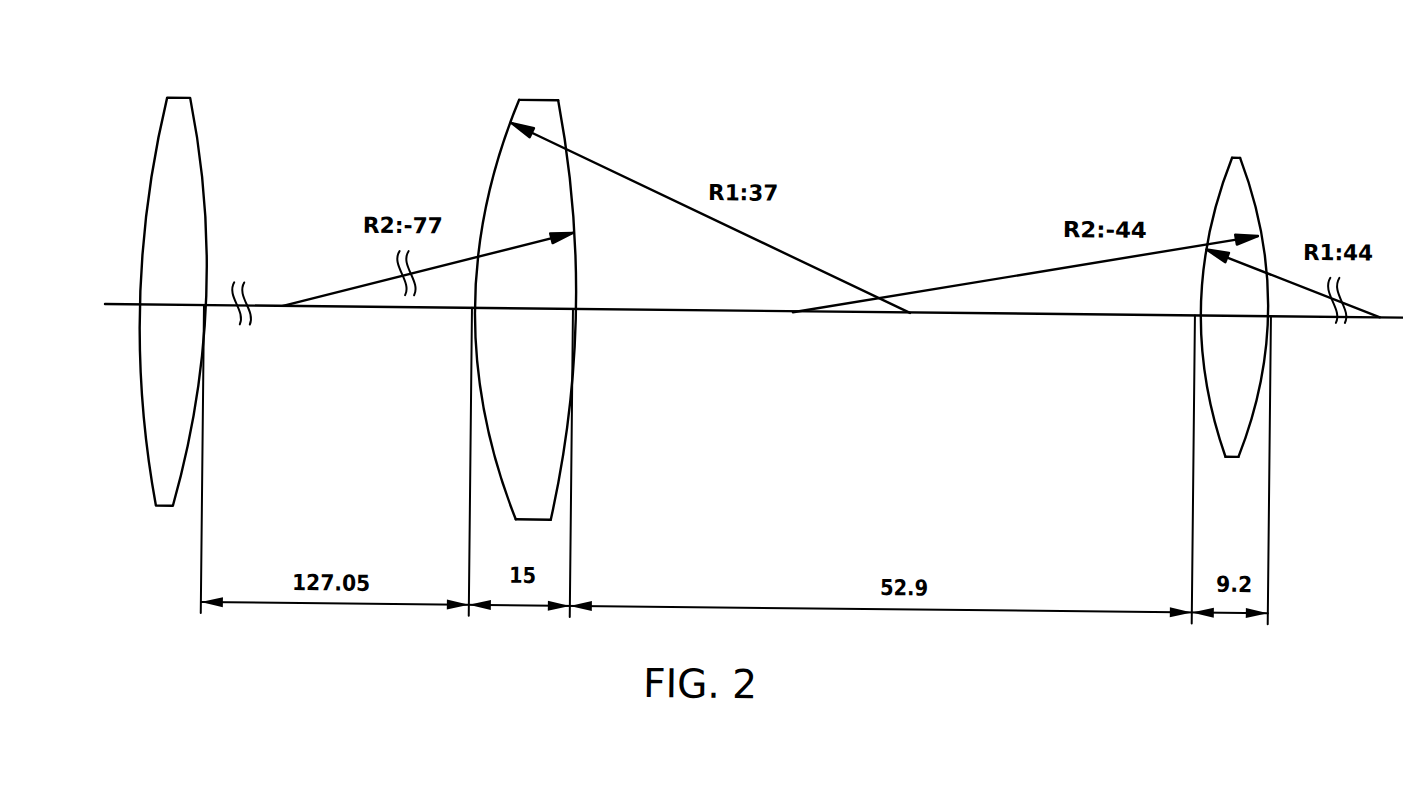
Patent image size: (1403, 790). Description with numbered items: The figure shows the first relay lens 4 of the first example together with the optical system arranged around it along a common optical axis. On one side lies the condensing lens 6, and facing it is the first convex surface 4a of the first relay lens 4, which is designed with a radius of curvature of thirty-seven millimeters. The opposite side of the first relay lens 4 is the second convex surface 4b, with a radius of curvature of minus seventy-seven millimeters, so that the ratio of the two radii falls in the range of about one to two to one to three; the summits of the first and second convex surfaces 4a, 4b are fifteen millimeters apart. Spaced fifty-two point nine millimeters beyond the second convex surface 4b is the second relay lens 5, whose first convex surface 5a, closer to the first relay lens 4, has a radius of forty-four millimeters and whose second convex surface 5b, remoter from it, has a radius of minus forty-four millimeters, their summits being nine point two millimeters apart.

The condensing lens 6 is at (168, 125).
The first relay lens 4 is at (533, 290).
The first convex surface 4a is at (503, 133).
The second convex surface 4b is at (564, 125).
The second relay lens 5 is at (1224, 288).
The first convex surface 5a is at (1208, 204).
The second convex surface 5b is at (1251, 174).